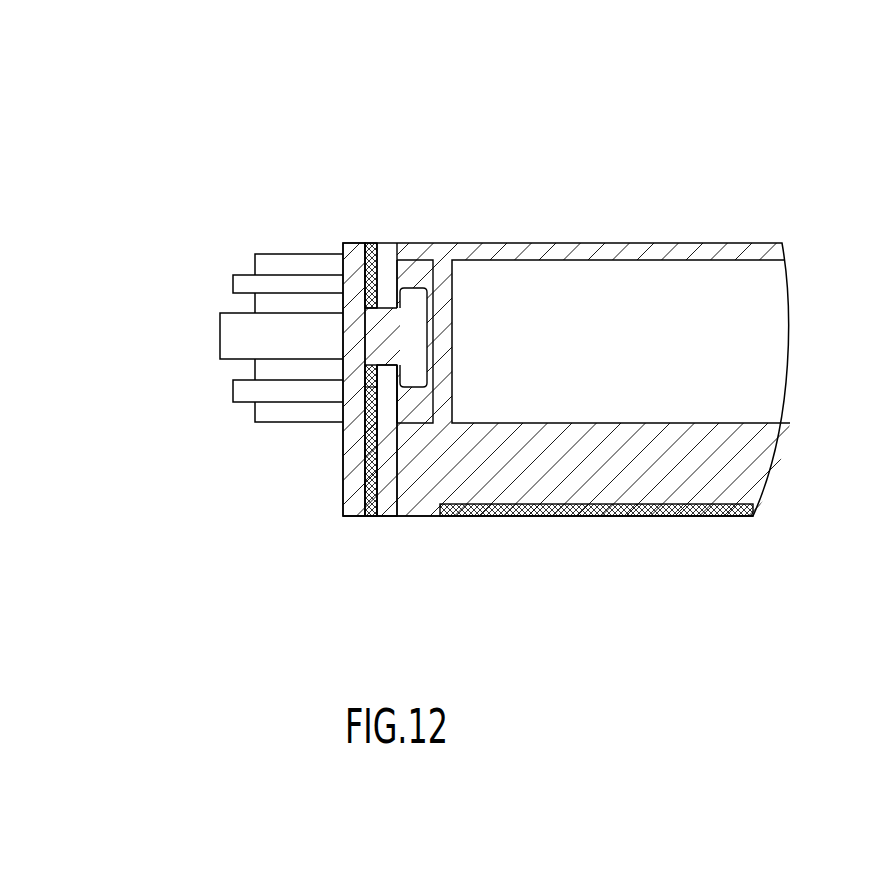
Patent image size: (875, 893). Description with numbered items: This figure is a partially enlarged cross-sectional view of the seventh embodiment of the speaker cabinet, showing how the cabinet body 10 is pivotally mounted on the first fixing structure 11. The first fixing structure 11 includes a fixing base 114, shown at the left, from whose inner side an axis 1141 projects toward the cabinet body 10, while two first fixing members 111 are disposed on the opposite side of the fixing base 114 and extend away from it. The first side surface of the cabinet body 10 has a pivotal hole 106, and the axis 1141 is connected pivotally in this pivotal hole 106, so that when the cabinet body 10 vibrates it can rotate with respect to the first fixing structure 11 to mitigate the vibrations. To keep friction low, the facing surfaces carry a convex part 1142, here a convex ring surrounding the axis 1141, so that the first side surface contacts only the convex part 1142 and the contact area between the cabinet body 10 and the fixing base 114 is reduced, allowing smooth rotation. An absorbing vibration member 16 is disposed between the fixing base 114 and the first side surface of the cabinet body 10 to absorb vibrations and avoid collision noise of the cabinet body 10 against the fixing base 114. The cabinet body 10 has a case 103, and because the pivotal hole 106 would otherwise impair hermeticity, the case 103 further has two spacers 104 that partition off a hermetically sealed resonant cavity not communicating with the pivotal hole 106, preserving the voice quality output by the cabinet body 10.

The cabinet body 10 is at (720, 235).
The spacer 104 is at (455, 323).
The fixing base 114 is at (355, 517).
The convex part 1142 is at (379, 290).
The axis 1141 is at (412, 388).
The pivotal hole 106 is at (387, 368).
The case 103 is at (697, 515).
The absorbing vibration member 16 is at (378, 517).
The first fixing structure 11 is at (197, 392).
The first fixing member 111 is at (220, 338).